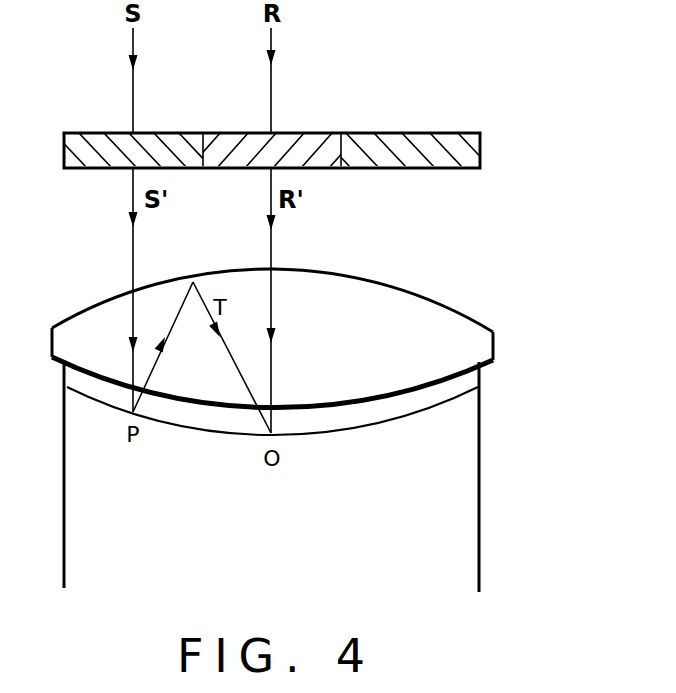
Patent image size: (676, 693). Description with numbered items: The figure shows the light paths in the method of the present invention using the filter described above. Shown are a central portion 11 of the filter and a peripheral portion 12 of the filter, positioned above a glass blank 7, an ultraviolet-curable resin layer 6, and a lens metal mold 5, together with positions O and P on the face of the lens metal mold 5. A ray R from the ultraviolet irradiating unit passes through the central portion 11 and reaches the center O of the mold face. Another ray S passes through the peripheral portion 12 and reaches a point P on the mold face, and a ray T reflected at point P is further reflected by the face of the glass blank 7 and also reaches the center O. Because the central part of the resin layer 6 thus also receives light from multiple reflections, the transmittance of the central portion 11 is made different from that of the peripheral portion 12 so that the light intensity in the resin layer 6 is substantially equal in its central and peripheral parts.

The lens metal mold 5 is at (458, 472).
The ultraviolet-curable resin layer 6 is at (465, 387).
The glass blank 7 is at (436, 324).
The central portion of the filter 11 is at (314, 139).
The peripheral portion of the filter 12 is at (423, 141).